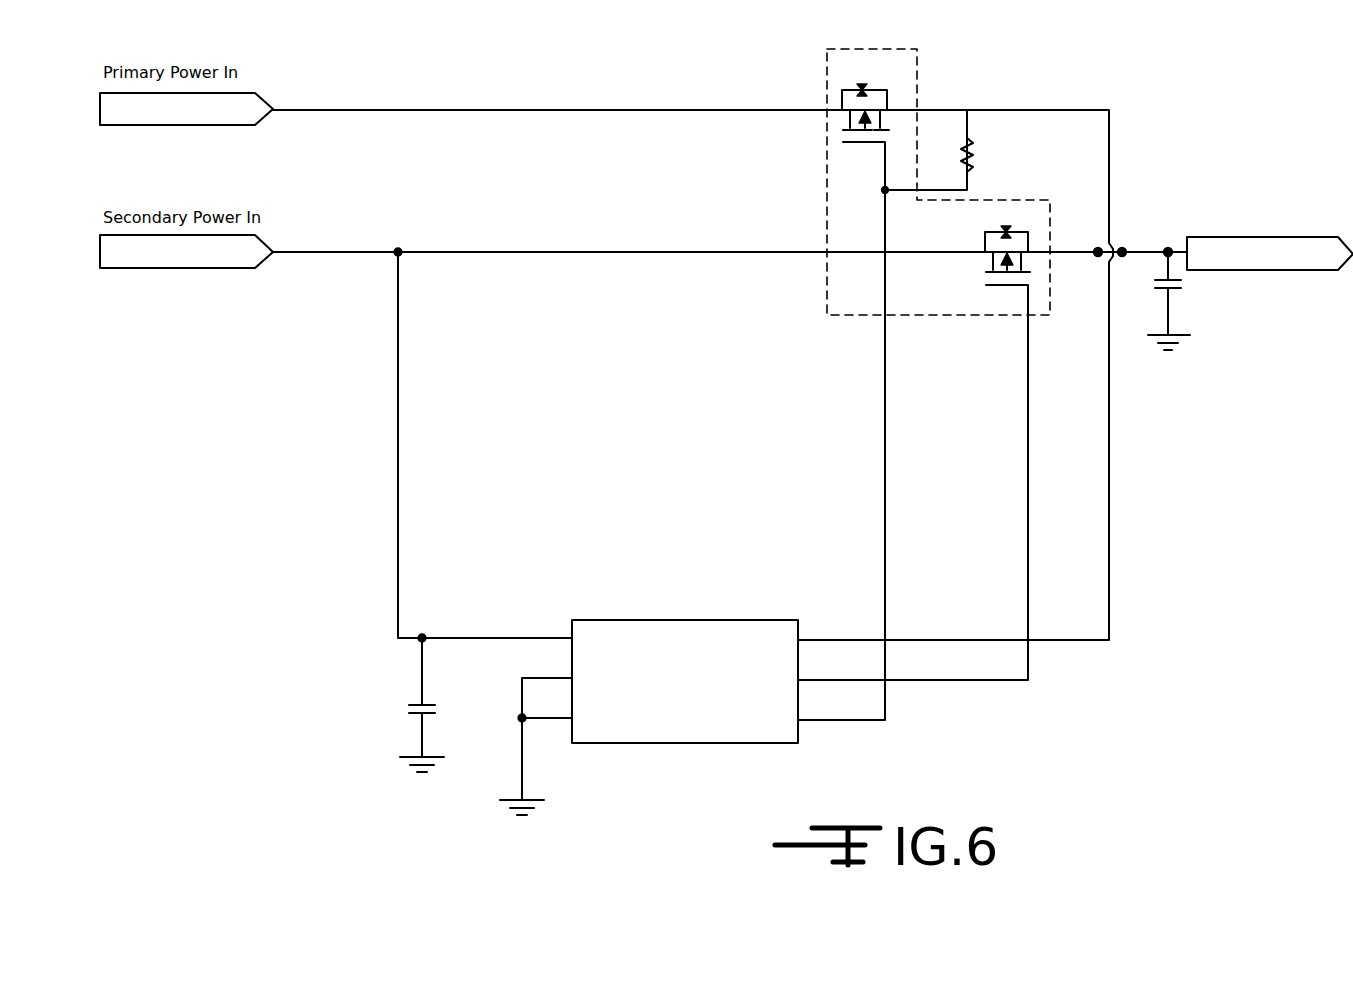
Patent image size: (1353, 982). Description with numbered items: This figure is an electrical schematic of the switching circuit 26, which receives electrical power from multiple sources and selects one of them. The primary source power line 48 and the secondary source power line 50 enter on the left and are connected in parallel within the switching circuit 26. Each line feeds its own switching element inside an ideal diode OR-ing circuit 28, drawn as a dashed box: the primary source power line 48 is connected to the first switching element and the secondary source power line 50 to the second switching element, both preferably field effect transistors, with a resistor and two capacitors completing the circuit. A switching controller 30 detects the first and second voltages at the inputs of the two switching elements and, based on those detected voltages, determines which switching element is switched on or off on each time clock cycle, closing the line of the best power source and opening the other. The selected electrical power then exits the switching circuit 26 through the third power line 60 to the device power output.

The switching circuit 26 is at (362, 680).
The ideal diode OR-ing circuit 28 is at (918, 77).
The switching controller 30 is at (770, 727).
The primary source power line 48 is at (493, 108).
The secondary source power line 50 is at (565, 250).
The third power line 60 is at (1180, 250).